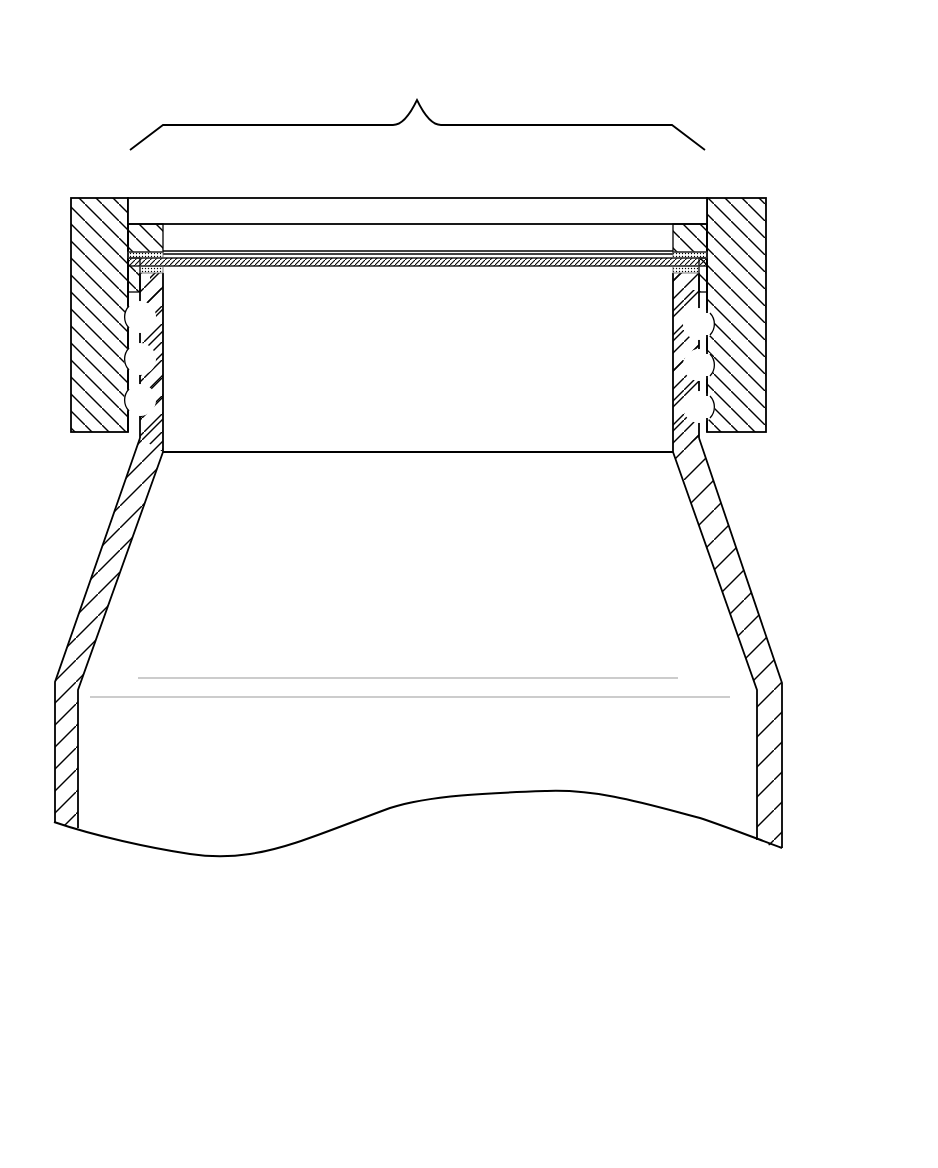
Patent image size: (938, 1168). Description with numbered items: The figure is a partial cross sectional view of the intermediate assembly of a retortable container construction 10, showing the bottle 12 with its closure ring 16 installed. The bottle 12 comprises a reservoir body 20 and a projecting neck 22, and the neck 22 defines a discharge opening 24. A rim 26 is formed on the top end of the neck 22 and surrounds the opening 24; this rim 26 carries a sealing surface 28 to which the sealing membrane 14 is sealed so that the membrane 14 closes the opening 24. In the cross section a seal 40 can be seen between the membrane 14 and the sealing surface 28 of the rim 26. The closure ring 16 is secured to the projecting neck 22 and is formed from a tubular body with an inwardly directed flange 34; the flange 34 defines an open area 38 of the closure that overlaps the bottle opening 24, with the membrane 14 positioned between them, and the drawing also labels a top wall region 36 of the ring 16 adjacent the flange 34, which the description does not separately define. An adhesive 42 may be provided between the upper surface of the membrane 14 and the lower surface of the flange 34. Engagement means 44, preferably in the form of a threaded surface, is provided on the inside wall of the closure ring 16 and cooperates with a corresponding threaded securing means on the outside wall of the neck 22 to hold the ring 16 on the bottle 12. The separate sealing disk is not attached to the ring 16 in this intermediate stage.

The retortable container construction 10 is at (58, 137).
The bottle 12 is at (762, 612).
The sealing membrane 14 is at (423, 250).
The closure ring 16 is at (783, 370).
The reservoir body 20 is at (781, 775).
The projecting neck 22 is at (687, 445).
The discharge opening 24 is at (363, 385).
The rim 26 is at (138, 298).
The sealing surface 28 is at (688, 274).
The inwardly directed flange 34 is at (693, 235).
The top wall 36 is at (142, 210).
The open area 38 is at (417, 108).
The seal 40 is at (147, 280).
The adhesive 42 is at (128, 250).
The engagement means 44 is at (710, 347).